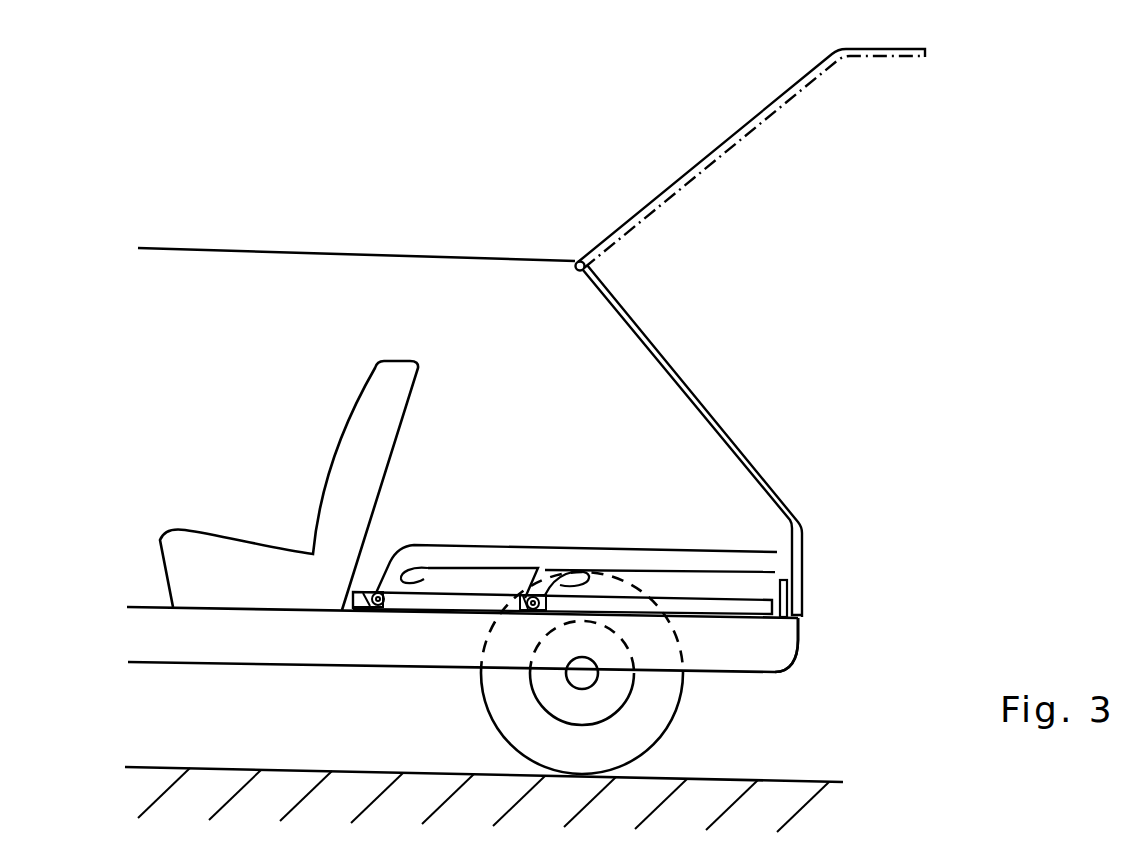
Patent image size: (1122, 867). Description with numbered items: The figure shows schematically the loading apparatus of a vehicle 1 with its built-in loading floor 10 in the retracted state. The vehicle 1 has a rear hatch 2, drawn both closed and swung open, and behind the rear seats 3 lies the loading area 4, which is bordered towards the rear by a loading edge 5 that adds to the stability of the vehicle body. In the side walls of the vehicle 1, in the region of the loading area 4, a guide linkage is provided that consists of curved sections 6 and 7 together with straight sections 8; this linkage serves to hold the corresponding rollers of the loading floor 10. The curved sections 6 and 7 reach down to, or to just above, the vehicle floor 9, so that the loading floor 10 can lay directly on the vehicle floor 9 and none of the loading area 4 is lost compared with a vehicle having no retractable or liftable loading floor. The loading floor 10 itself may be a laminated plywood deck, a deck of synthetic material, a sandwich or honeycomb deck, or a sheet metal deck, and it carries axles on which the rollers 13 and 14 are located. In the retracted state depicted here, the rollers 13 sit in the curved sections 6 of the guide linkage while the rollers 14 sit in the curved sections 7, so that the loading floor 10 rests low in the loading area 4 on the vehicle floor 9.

The vehicle 1 is at (364, 225).
The rear hatch 2 is at (660, 204).
The rear seats 3 is at (373, 421).
The loading area 4 is at (551, 418).
The loading edge 5 is at (790, 594).
The curved section 6 is at (427, 568).
The curved section 7 is at (582, 568).
The straight section 8 is at (543, 546).
The vehicle floor 9 is at (750, 622).
The loading floor 10 is at (695, 600).
The rollers 13 is at (380, 610).
The rollers 14 is at (522, 612).